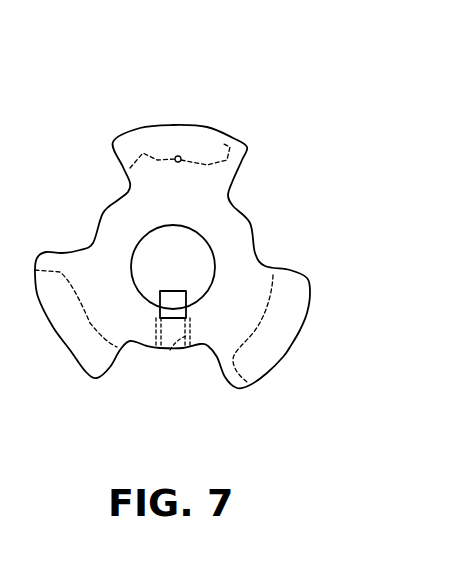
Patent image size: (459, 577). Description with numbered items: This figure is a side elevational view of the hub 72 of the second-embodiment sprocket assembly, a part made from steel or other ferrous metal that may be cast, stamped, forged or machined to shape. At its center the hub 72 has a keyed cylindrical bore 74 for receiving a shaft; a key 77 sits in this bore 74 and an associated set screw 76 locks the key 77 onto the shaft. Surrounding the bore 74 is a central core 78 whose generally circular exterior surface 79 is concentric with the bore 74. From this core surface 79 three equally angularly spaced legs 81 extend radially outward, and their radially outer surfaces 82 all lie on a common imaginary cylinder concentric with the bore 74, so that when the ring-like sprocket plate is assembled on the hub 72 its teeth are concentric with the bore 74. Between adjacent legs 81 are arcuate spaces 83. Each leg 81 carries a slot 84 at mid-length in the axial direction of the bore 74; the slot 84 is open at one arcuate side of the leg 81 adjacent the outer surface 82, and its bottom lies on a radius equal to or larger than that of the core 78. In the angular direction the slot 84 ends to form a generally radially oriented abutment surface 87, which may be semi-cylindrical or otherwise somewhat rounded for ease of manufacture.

The hub 72 is at (262, 130).
The keyed cylindrical bore 74 is at (213, 256).
The set screw 76 is at (171, 350).
The key 77 is at (186, 296).
The central core 78 is at (245, 250).
The exterior surface 79 is at (103, 213).
The legs 81 is at (162, 140).
The radially outer surfaces 82 is at (197, 127).
The arcuate spaces 83 is at (252, 187).
The slot 84 is at (143, 153).
The abutment surface 87 is at (226, 152).